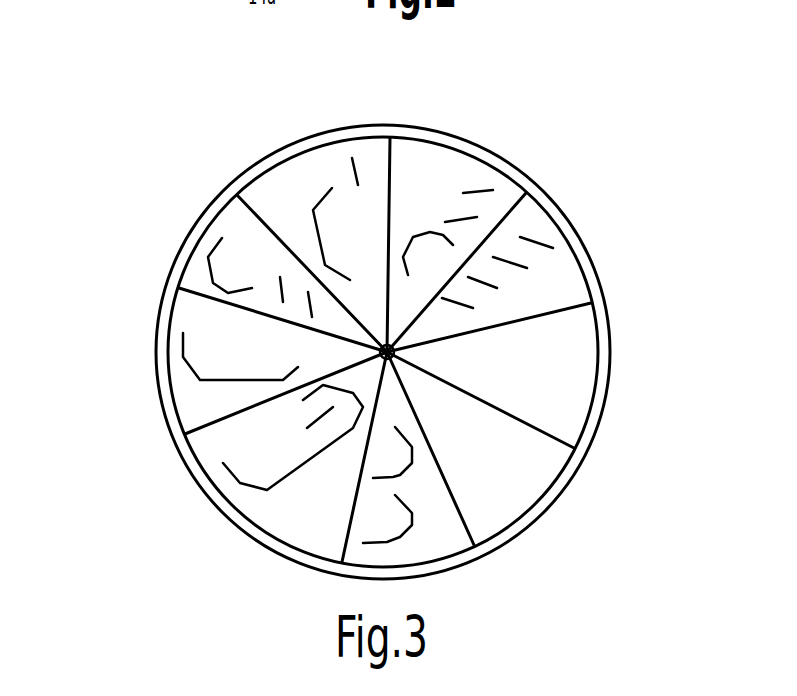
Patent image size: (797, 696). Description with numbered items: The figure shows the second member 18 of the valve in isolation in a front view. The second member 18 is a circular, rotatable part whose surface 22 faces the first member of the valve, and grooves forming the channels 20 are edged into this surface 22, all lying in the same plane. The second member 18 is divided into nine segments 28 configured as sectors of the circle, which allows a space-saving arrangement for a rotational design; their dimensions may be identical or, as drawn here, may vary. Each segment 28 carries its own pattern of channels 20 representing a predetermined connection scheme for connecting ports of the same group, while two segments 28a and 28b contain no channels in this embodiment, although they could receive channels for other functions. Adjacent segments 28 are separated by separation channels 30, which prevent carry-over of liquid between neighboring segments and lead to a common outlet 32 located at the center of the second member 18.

The second member 18 is at (168, 218).
The channels 20 is at (210, 383).
The surface 22 is at (416, 177).
The segments 28 is at (240, 231).
The segment 28a is at (543, 380).
The segment 28b is at (507, 477).
The separation channels 30 is at (200, 298).
The outlet 32 is at (395, 355).